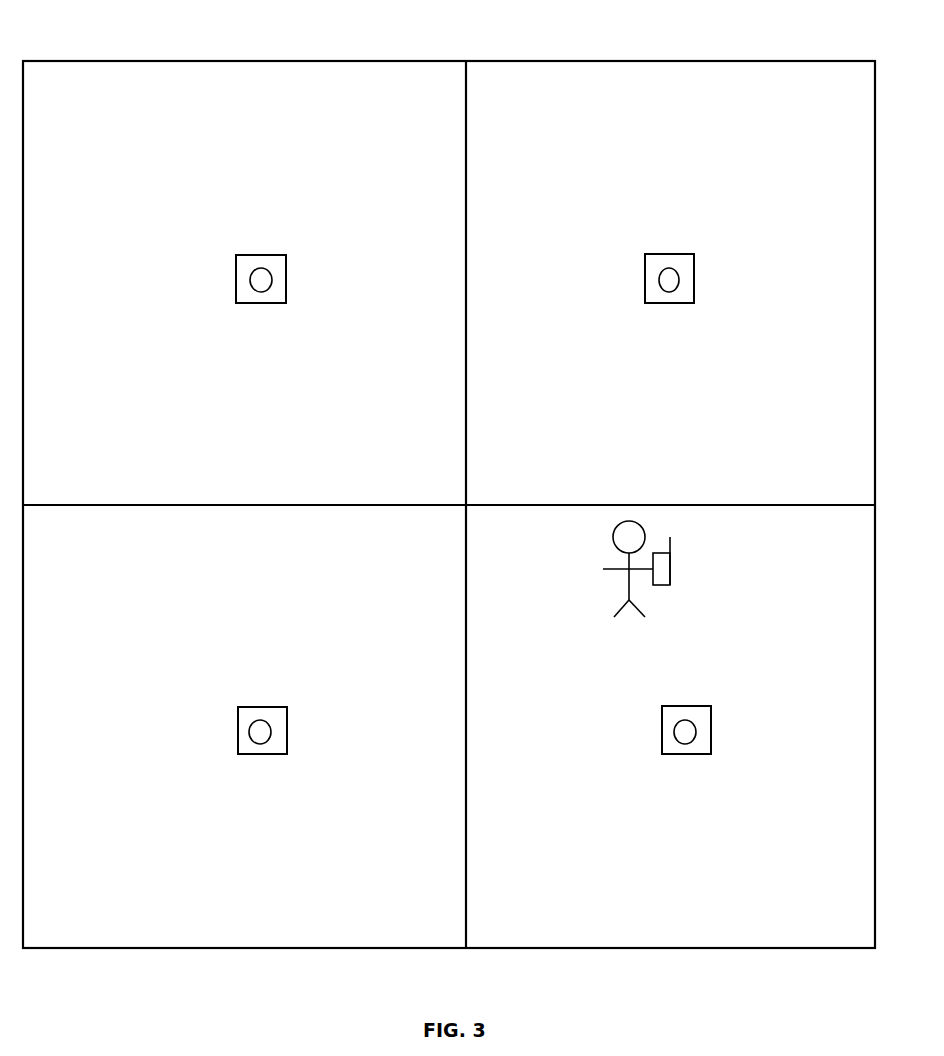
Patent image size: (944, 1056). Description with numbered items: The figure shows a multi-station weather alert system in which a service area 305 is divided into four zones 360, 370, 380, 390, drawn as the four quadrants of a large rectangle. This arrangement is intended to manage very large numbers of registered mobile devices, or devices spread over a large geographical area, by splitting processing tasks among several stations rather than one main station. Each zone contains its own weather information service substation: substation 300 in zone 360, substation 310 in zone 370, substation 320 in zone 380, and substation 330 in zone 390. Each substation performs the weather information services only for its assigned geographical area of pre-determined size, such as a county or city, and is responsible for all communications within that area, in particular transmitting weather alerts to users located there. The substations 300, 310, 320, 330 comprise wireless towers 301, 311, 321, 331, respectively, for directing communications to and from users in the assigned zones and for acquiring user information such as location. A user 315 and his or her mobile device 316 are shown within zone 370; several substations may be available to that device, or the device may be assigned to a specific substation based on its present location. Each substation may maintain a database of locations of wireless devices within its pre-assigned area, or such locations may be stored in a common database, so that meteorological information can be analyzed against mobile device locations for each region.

The service area 305 is at (238, 948).
The zone 360 is at (639, 129).
The zone 370 is at (738, 894).
The zone 380 is at (240, 893).
The zone 390 is at (190, 466).
The weather information service substation 300 is at (665, 260).
The wireless tower 301 is at (662, 275).
The weather information service substation 310 is at (696, 743).
The wireless tower 311 is at (696, 735).
The user 315 is at (679, 569).
The mobile device 316 is at (670, 576).
The weather information service substation 320 is at (266, 762).
The wireless tower 321 is at (271, 734).
The weather information service substation 330 is at (270, 302).
The wireless tower 331 is at (272, 279).